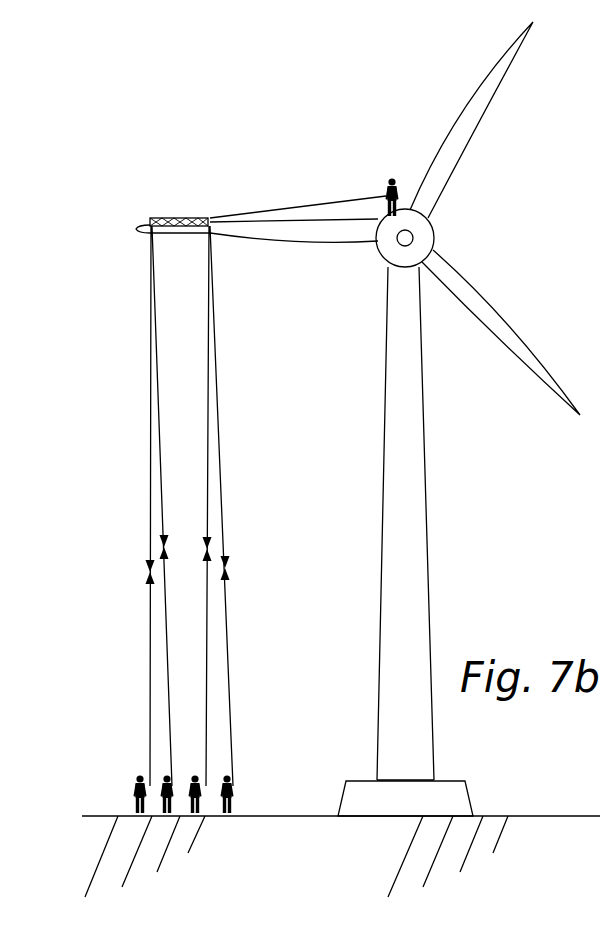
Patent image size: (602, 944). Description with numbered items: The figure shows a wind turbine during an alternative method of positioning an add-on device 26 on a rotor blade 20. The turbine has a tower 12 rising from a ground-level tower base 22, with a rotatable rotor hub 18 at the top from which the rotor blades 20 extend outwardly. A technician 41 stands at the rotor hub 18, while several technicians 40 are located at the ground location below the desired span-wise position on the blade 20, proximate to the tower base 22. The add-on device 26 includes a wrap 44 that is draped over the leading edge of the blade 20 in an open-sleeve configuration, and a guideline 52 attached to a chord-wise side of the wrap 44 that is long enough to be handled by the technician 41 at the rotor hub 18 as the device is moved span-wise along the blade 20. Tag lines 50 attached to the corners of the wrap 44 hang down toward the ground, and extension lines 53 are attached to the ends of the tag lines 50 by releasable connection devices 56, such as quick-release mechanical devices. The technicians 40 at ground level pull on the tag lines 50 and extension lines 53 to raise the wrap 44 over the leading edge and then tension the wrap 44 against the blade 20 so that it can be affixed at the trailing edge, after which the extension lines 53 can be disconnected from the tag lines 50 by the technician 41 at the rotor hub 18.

The tower 12 is at (426, 485).
The rotor hub 18 is at (442, 221).
The rotor blade 20 is at (468, 113).
The tower base 22 is at (470, 796).
The add-on device 26 is at (133, 213).
The technicians 40 is at (136, 792).
The technician 41 is at (384, 191).
The wrap 44 is at (182, 218).
The tag lines 50 is at (218, 445).
The guideline 52 is at (320, 201).
The extension lines 53 is at (148, 663).
The releasable connection device 56 is at (229, 566).